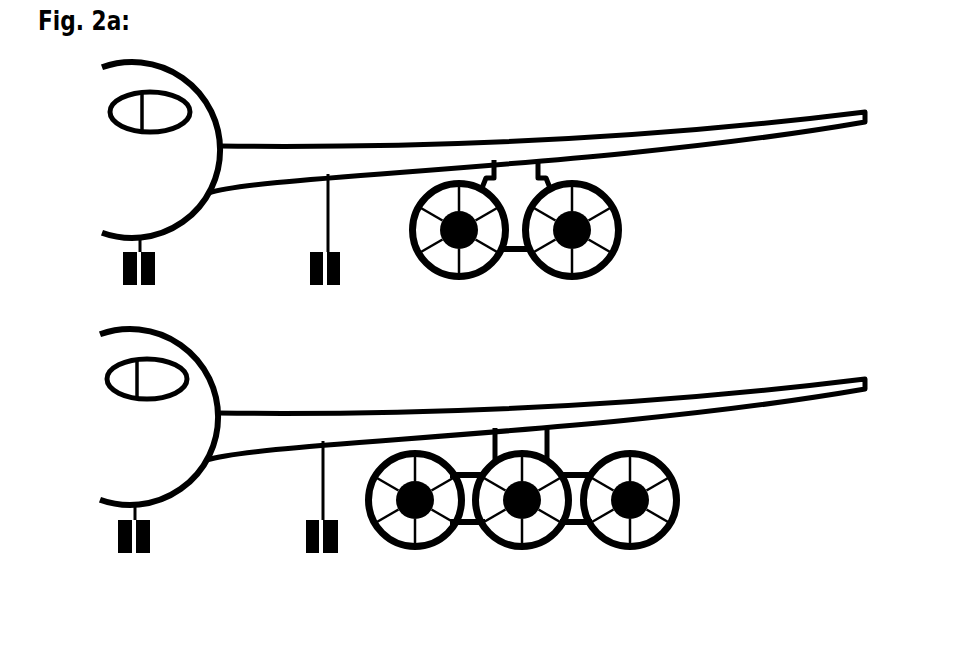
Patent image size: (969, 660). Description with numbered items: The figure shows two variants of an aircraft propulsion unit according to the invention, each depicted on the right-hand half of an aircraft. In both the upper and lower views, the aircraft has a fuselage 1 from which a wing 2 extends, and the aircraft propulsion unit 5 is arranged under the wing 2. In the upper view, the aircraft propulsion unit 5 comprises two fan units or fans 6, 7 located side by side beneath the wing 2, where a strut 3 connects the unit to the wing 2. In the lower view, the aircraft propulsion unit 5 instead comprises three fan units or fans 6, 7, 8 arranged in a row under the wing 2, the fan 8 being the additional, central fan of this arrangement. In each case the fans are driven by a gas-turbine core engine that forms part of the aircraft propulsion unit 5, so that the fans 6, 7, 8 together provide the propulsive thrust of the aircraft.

The fuselage 1 is at (197, 138).
The wing 2 is at (305, 153).
The strut 3 is at (514, 187).
The aircraft propulsion unit 5 is at (518, 284).
The fan 6 is at (425, 272).
The fan 7 is at (605, 272).
The fan 8 is at (525, 550).